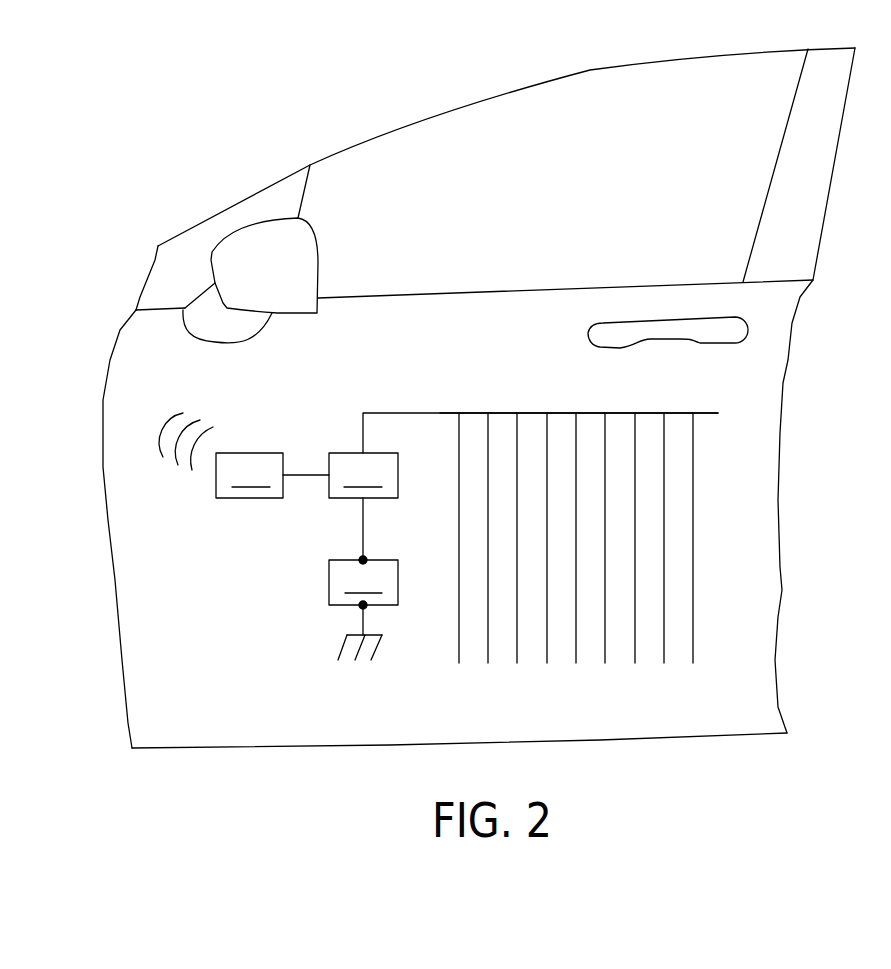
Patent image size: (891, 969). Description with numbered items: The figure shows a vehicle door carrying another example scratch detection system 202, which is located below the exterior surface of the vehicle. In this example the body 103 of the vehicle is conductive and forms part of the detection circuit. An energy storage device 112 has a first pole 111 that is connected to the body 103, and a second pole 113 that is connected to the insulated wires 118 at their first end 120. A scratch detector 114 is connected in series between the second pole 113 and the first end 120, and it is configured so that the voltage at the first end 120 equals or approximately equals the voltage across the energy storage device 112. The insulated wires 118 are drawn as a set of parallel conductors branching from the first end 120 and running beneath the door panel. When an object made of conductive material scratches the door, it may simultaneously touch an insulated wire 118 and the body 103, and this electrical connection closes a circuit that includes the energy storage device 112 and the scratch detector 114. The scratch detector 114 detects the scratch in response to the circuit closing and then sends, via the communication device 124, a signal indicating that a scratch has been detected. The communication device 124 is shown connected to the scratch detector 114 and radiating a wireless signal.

The body 103 is at (302, 708).
The first pole 111 is at (357, 610).
The energy storage device 112 is at (363, 582).
The second pole 113 is at (360, 552).
The scratch detector 114 is at (363, 475).
The insulated wires 118 is at (562, 452).
The first end 120 is at (470, 413).
The communication device 124 is at (244, 455).
The scratch detection system 202 is at (355, 407).